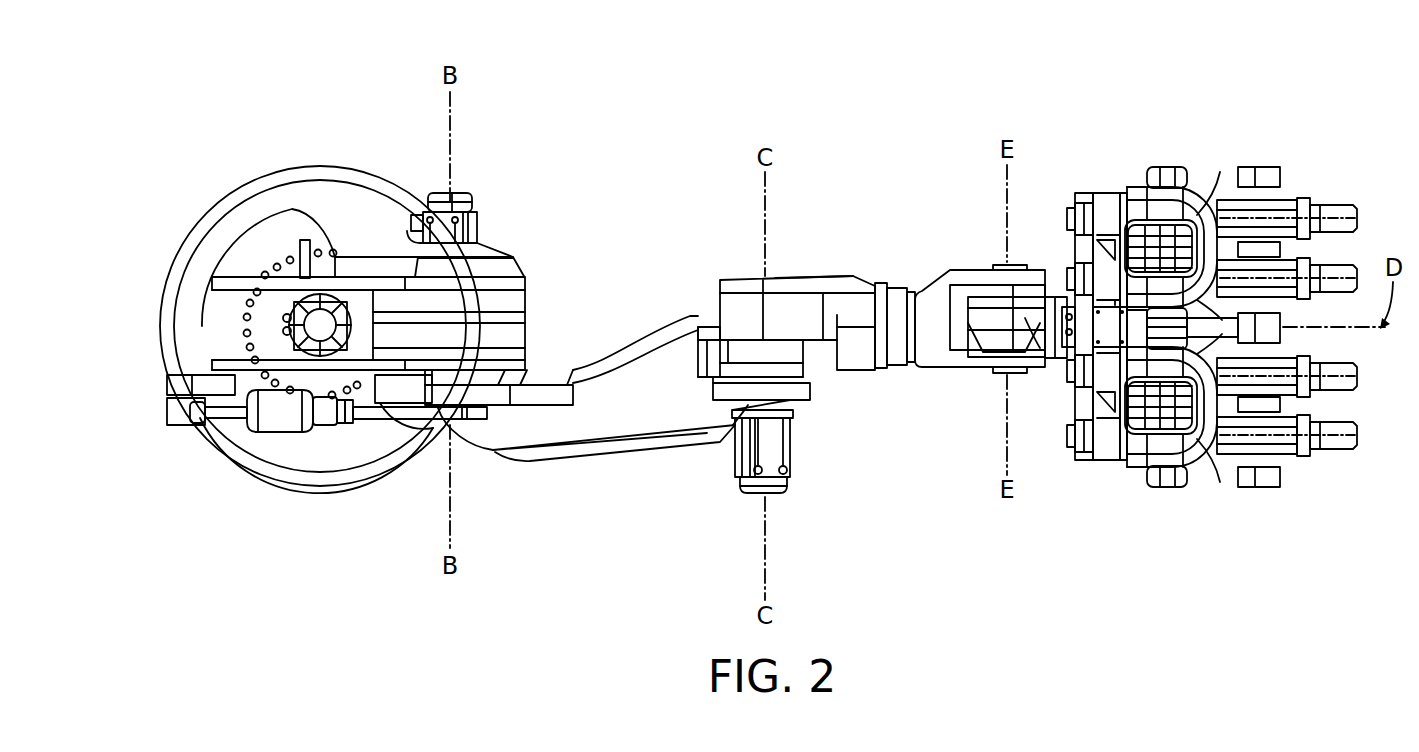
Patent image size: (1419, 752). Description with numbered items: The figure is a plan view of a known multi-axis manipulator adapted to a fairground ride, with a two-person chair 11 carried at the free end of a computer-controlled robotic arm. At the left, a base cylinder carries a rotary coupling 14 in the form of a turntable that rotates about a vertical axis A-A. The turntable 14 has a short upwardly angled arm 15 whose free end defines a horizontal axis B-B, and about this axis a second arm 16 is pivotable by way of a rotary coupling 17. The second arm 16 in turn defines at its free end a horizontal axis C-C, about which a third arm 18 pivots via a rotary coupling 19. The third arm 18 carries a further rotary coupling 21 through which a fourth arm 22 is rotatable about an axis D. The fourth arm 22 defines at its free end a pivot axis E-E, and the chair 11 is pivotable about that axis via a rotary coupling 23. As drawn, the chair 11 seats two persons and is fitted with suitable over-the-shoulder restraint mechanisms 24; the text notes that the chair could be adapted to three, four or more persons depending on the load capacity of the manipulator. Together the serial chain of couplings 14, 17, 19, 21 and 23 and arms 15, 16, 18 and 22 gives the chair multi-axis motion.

The chair 11 is at (1103, 195).
The rotary coupling 14 is at (237, 252).
The upwardly angled arm 15 is at (357, 207).
The second arm 16 is at (640, 445).
The rotary coupling 17 is at (534, 322).
The third arm 18 is at (826, 282).
The rotary coupling 19 is at (744, 332).
The rotary coupling 21 is at (895, 282).
The fourth arm 22 is at (948, 275).
The rotary coupling 23 is at (991, 338).
The over-the-shoulder restraint mechanisms 24 is at (1162, 205).